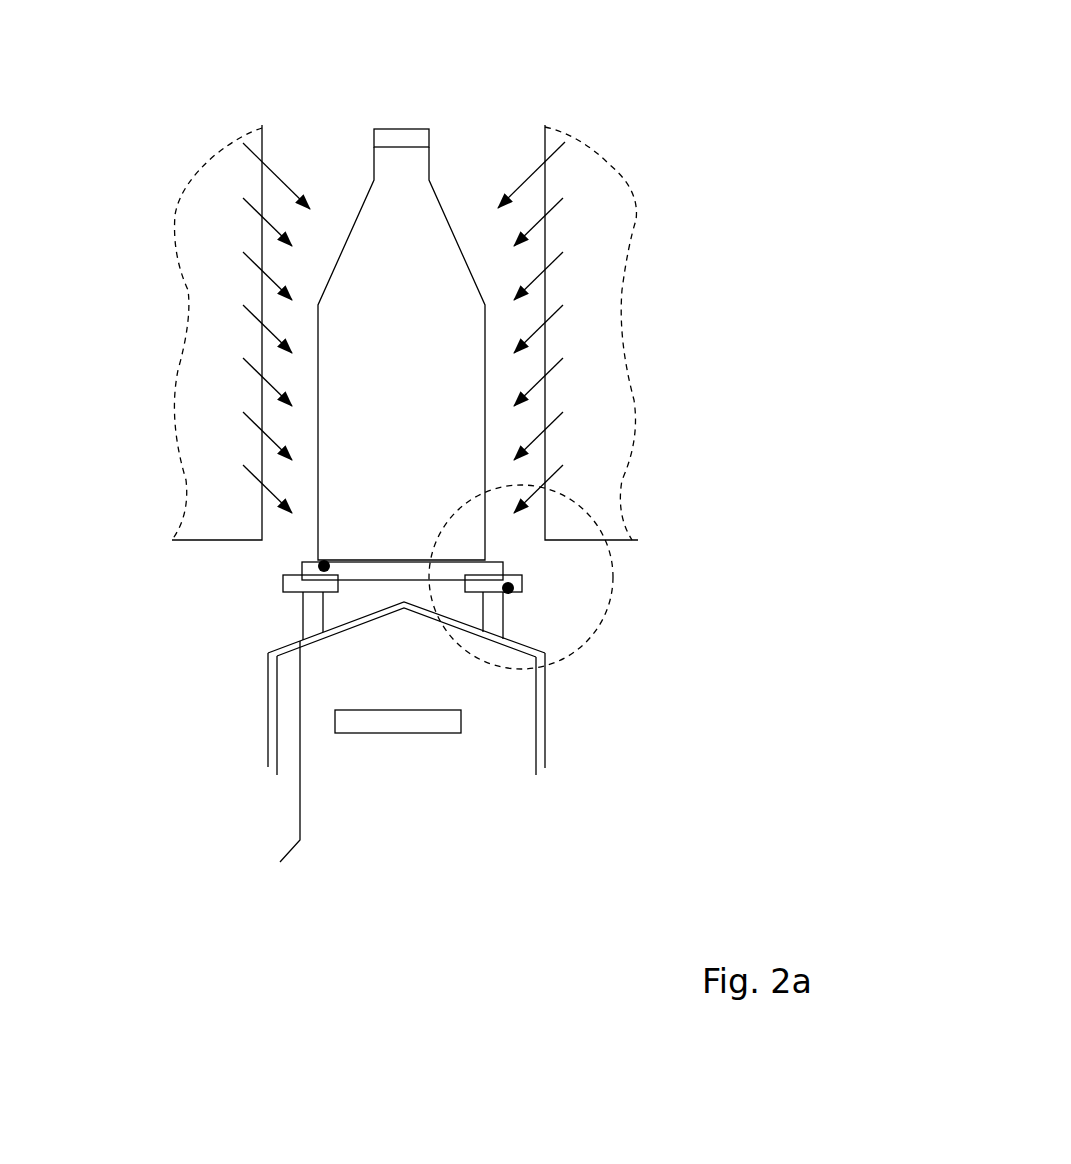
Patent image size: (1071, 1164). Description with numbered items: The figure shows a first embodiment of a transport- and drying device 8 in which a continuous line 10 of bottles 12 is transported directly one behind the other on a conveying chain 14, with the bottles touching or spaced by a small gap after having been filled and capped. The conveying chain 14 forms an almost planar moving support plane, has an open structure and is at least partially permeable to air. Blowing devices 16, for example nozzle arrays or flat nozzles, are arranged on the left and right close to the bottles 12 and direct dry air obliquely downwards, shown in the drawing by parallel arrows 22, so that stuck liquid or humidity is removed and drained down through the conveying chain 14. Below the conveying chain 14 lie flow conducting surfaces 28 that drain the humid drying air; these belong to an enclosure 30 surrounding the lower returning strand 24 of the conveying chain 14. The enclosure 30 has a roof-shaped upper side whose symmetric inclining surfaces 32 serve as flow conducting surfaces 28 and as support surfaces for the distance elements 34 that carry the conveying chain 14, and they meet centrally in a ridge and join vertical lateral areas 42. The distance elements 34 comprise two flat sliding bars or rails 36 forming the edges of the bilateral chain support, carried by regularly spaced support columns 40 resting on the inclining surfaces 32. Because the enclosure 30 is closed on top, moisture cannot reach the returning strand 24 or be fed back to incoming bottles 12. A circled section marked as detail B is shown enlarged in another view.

The transport- and drying device 8 is at (125, 328).
The continuous line 10 is at (505, 297).
The bottles 12 is at (446, 102).
The conveying chain 14 is at (322, 567).
The blowing devices 16 is at (230, 190).
The heat radiation 22 is at (520, 430).
The lower returning strand 24 is at (417, 725).
The flow conducting surfaces 28 is at (331, 637).
The enclosure 30 is at (236, 768).
The inclining surfaces 32 is at (275, 649).
The distance elements 34 is at (540, 626).
The sliding bars or rails 36 is at (510, 589).
The support columns 40 is at (266, 759).
The vertical lateral areas 42 is at (265, 702).
The detail B is at (568, 658).